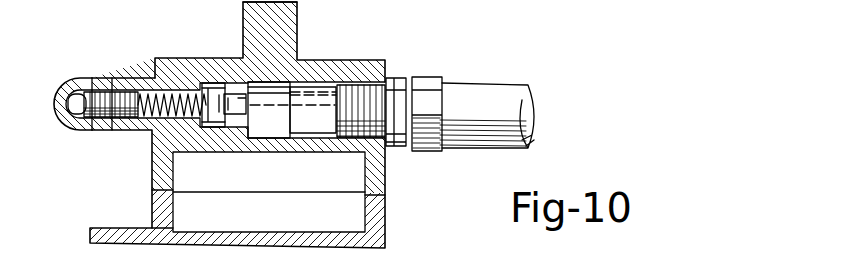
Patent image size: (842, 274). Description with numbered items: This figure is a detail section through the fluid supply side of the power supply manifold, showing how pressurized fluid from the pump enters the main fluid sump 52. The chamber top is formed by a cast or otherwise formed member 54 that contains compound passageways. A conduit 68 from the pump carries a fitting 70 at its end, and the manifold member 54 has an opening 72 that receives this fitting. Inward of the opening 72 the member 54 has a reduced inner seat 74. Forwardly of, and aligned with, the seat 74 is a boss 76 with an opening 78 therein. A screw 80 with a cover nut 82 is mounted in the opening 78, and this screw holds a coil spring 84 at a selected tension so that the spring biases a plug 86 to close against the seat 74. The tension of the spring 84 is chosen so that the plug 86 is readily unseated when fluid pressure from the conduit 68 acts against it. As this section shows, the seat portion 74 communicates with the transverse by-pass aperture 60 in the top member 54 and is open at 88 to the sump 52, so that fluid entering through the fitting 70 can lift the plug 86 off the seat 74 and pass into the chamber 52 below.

The main fluid sump 52 is at (352, 226).
The manifold top member 54 is at (217, 62).
The intermediate by-pass aperture 60 is at (240, 78).
The conduit 68 is at (515, 80).
The fitting 70 is at (402, 147).
The opening 72 is at (320, 123).
The reduced inner seat 74 is at (246, 108).
The boss 76 is at (123, 131).
The boss opening 78 is at (125, 93).
The screw 80 is at (75, 90).
The cover nut 82 is at (63, 132).
The coil spring 84 is at (172, 113).
The plug 86 is at (222, 120).
The opening to sump 88 is at (220, 152).